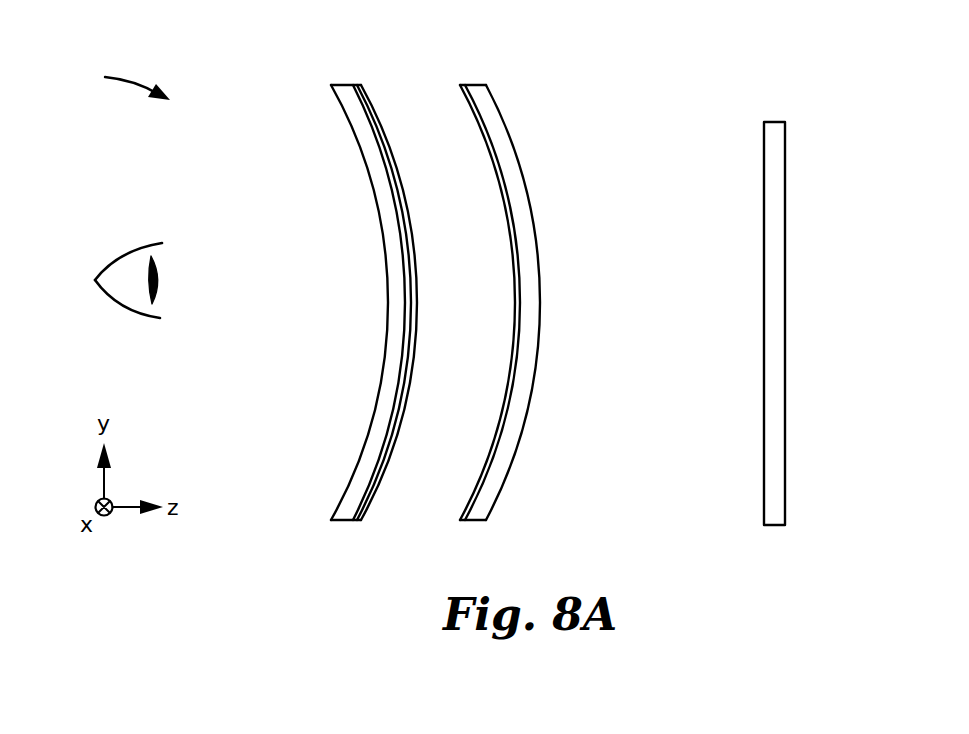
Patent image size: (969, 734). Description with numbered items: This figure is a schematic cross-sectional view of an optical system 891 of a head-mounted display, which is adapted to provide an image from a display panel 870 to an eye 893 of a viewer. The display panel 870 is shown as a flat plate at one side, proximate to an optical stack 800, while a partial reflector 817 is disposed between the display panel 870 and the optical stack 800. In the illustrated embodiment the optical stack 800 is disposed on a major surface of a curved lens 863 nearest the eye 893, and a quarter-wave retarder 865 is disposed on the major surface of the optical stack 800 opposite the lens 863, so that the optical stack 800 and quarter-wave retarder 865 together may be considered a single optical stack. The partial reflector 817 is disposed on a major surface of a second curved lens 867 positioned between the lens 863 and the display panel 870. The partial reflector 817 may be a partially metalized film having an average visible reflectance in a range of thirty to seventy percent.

The optical stack 800 is at (357, 519).
The partial reflector 817 is at (471, 502).
The lens 863 is at (343, 92).
The quarter-wave retarder 865 is at (365, 518).
The lens 867 is at (482, 93).
The display panel 870 is at (778, 220).
The optical system 891 is at (111, 82).
The eye 893 is at (123, 268).